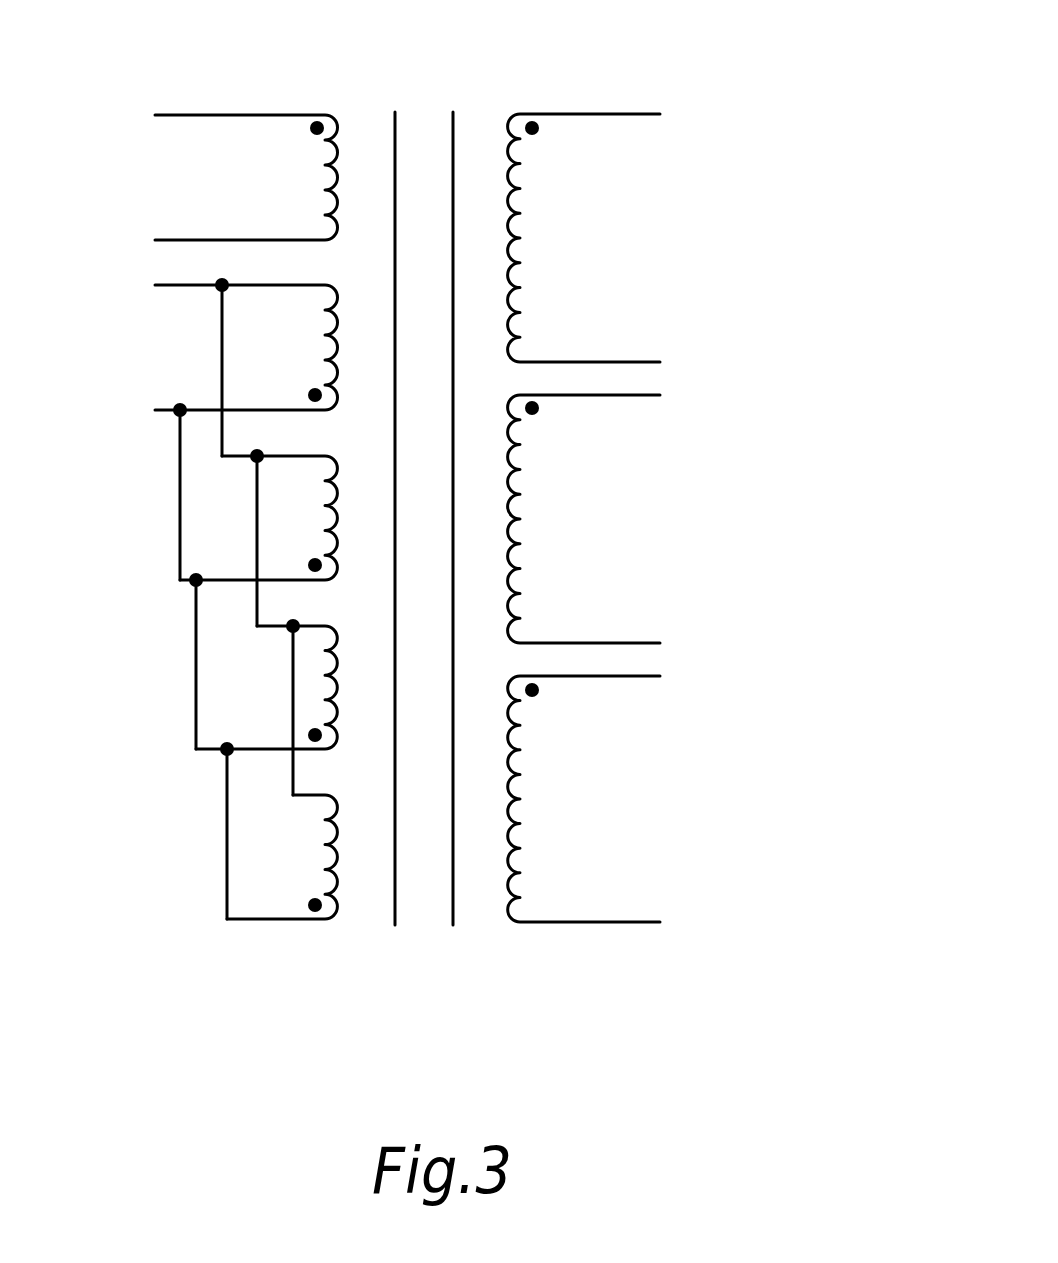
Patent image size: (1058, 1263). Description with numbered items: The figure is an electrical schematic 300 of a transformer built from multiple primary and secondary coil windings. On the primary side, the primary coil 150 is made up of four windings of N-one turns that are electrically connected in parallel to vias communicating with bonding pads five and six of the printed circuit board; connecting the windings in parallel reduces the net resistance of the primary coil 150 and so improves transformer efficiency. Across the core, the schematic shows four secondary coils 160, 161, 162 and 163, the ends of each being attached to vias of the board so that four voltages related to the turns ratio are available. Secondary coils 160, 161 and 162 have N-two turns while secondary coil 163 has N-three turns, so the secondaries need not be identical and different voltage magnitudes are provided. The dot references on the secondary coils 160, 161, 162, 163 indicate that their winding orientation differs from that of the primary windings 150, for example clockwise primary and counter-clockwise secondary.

The electrical schematic 300 is at (777, 73).
The primary coil 150 is at (227, 920).
The secondary coil 160 is at (594, 923).
The secondary coil 161 is at (520, 543).
The secondary coil 162 is at (520, 262).
The secondary coil 163 is at (326, 158).